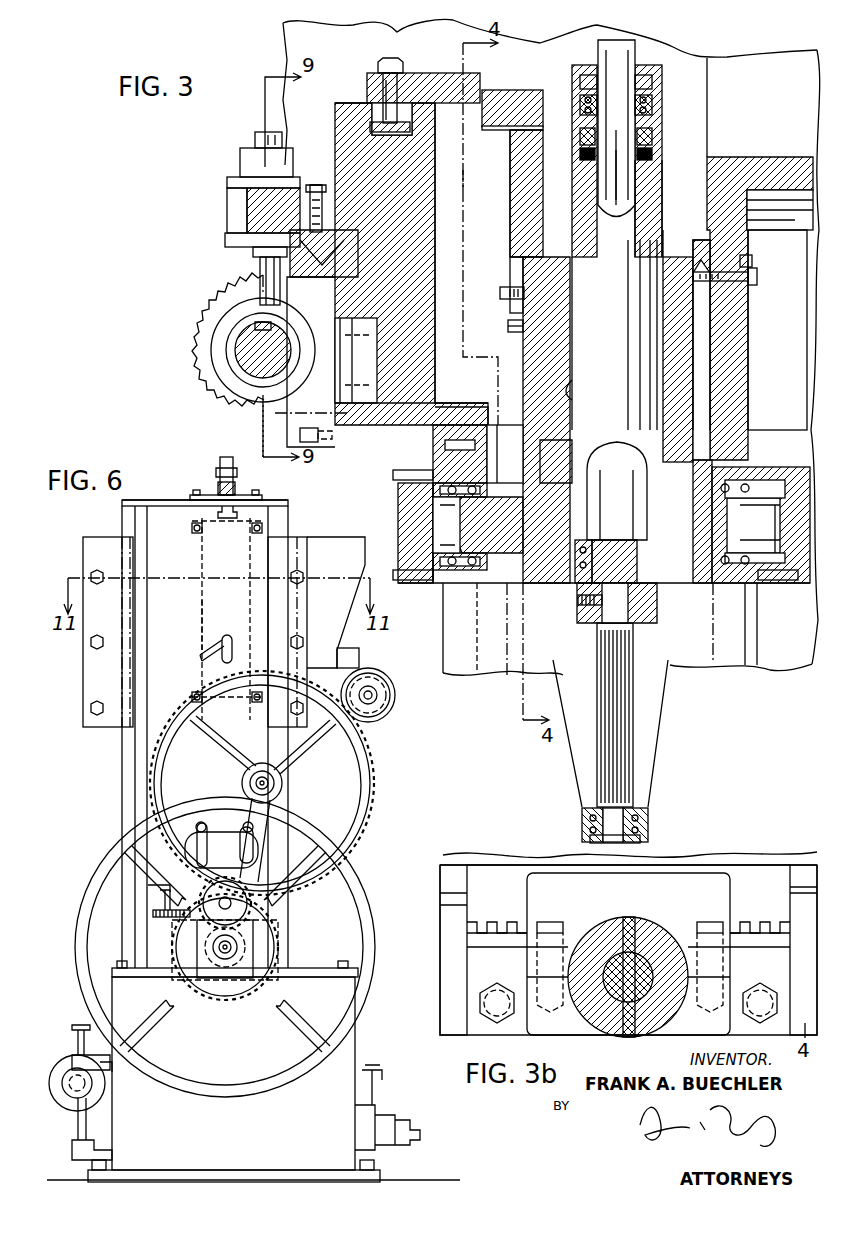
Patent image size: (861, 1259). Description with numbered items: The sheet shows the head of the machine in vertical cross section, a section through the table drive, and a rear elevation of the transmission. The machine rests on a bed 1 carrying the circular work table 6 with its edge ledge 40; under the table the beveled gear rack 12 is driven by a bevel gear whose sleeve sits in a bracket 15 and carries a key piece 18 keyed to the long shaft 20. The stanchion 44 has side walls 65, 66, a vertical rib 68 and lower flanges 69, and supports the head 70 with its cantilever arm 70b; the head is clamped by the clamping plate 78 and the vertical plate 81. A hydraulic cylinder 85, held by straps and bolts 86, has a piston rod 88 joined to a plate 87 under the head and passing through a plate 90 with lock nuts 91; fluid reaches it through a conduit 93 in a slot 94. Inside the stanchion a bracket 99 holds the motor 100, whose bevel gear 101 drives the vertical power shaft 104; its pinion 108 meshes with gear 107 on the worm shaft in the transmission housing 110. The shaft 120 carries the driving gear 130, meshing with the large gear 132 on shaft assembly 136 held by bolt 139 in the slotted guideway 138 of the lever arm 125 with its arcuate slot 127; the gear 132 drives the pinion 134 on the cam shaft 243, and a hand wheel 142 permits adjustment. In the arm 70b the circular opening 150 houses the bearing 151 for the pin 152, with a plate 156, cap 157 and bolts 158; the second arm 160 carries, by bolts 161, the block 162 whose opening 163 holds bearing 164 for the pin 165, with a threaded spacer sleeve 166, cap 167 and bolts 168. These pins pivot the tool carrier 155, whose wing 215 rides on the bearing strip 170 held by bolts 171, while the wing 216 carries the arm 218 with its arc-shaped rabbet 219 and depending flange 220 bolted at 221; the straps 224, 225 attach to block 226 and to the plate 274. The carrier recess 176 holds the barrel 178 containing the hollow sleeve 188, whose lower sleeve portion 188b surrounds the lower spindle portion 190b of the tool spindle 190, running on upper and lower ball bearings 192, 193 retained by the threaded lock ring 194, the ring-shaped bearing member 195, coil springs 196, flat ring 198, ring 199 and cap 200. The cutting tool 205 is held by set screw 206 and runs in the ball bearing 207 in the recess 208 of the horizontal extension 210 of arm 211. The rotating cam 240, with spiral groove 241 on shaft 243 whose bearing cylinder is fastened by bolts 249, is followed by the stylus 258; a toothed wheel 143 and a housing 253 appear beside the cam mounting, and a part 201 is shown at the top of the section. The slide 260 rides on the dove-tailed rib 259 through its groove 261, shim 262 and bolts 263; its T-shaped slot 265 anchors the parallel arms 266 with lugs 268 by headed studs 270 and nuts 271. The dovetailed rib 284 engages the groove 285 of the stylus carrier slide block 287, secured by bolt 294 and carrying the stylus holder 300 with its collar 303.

In FIG. 6, the bed 1 is at (345, 1052).
In FIG. 3B, the work table 6 is at (445, 875).
In FIG. 3B, the circular beveled gear rack 12 is at (795, 865).
In FIG. 3B, the bracket 15 is at (720, 880).
In FIG. 3B, the key piece 18 is at (635, 935).
In FIG. 3B, the long shaft 20 is at (610, 990).
In FIG. 3B, the ledge 40 is at (482, 863).
In FIG. 6, the stanchion 44 is at (278, 925).
In FIG. 6, the side wall 65 is at (278, 777).
In FIG. 6, the side wall 66 is at (122, 796).
In FIG. 6, the vertical rib 68 is at (127, 505).
In FIG. 6, the lower flanges 69 is at (120, 960).
In FIG. 6, the head 70 is at (322, 548).
In FIG. 3, the cantilever arm 70b is at (752, 262).
In FIG. 6, the clamping plate 78 is at (105, 545).
In FIG. 6, the vertical plate 81 is at (285, 548).
In FIG. 6, the hydraulic cylinder 85 is at (200, 605).
In FIG. 6, the straps and bolts 86 is at (305, 655).
In FIG. 6, the plate 87 is at (205, 770).
In FIG. 3, the piston rod 88 is at (257, 447).
In FIG. 6, the plate 90 is at (240, 495).
In FIG. 6, the lock nuts 91 is at (238, 462).
In FIG. 6, the conduit 93 is at (218, 640).
In FIG. 6, the slot 94 is at (228, 636).
In FIG. 6, the bracket 99 is at (199, 830).
In FIG. 6, the motor 100 is at (262, 840).
In FIG. 6, the bevel gear 101 is at (128, 844).
In FIG. 6, the vertical power shaft 104 is at (160, 896).
In FIG. 6, the gear 107 is at (177, 903).
In FIG. 6, the pinion 108 is at (151, 1012).
In FIG. 6, the transmission housing 110 is at (278, 944).
In FIG. 6, the shaft 120 is at (223, 960).
In FIG. 6, the lever arm 125 is at (292, 874).
In FIG. 6, the arcuate slot 127 is at (250, 903).
In FIG. 6, the driving gear 130 is at (264, 1010).
In FIG. 6, the large gear 132 is at (372, 790).
In FIG. 6, the pinion 134 is at (383, 705).
In FIG. 6, the shaft assembly 136 is at (290, 786).
In FIG. 6, the slotted guideway 138 is at (258, 852).
In FIG. 6, the bolt 139 is at (250, 775).
In FIG. 6, the hand wheel 142 is at (360, 890).
In FIG. 3, the gear 143 is at (192, 318).
In FIG. 3, the circular opening 150 is at (713, 663).
In FIG. 3, the bearing 151 is at (757, 590).
In FIG. 3, the pin 152 is at (700, 568).
In FIG. 3, the tool carrier 155 is at (697, 393).
In FIG. 3, the plate 156 is at (757, 432).
In FIG. 3, the cap 157 is at (762, 597).
In FIG. 3, the bolts 158 is at (800, 465).
In FIG. 3, the second arm 160 is at (428, 418).
In FIG. 3, the bolts 161 is at (398, 467).
In FIG. 3, the block 162 is at (435, 449).
In FIG. 3, the opening 163 is at (455, 585).
In FIG. 3, the bearing 164 is at (443, 600).
In FIG. 3, the pin 165 is at (560, 440).
In FIG. 3, the threaded spacer sleeve 166 is at (488, 483).
In FIG. 3, the cap 167 is at (399, 565).
In FIG. 3, the bolts 168 is at (395, 508).
In FIG. 3, the bearing strip 170 is at (712, 244).
In FIG. 3, the bolts 171 is at (756, 278).
In FIG. 3, the cylindrical recess 176 is at (565, 388).
In FIG. 3, the barrel 178 is at (653, 207).
In FIG. 3, the hollow sleeve 188 is at (640, 192).
In FIG. 3, the housing lower portion 188b is at (607, 445).
In FIG. 3, the tool spindle 190 is at (620, 153).
In FIG. 3, the spindle lower portion 190b is at (614, 505).
In FIG. 3, the upper ball bearings 192 is at (655, 83).
In FIG. 3, the lower ball bearings 193 is at (575, 587).
In FIG. 3, the threaded lock ring 194 is at (584, 612).
In FIG. 3, the ring-shaped bearing member 195 is at (655, 122).
In FIG. 3, the coil springs 196 is at (654, 145).
In FIG. 3, the flat ring 198 is at (654, 158).
In FIG. 3, the ring 199 is at (647, 73).
In FIG. 3, the cap 200 is at (590, 57).
In FIG. 3, the head 201 is at (318, 185).
In FIG. 3, the cutting tool 205 is at (617, 767).
In FIG. 3, the set screw 206 is at (658, 613).
In FIG. 3, the ball bearing 207 is at (634, 845).
In FIG. 3, the recess 208 is at (649, 828).
In FIG. 3, the horizontal extension 210 is at (583, 837).
In FIG. 3, the arm 211 is at (585, 767).
In FIG. 3, the wing 215 is at (672, 257).
In FIG. 3, the wing 216 is at (561, 326).
In FIG. 3, the arm 218 is at (520, 208).
In FIG. 3, the arc-shaped rabbet 219 is at (522, 253).
In FIG. 3, the depending flange 220 is at (519, 320).
In FIG. 3, the bolt 221 is at (505, 287).
In FIG. 3, the flexible steel strap 224 is at (500, 128).
In FIG. 3, the flexible steel strap 225 is at (616, 128).
In FIG. 3, the block 226 is at (463, 198).
In FIG. 3, the rotating cam 240 is at (232, 352).
In FIG. 3, the spiral groove 241 is at (238, 378).
In FIG. 3, the shaft 243 is at (236, 343).
In FIG. 6, the bolts 249 is at (370, 668).
In FIG. 3, the housing 253 is at (287, 422).
In FIG. 3, the stylus 258 is at (260, 280).
In FIG. 3, the dove-tailed rib 259 is at (420, 228).
In FIG. 3, the slide 260 is at (353, 113).
In FIG. 3, the dove-tailed groove 261 is at (348, 145).
In FIG. 3, the shim 262 is at (367, 360).
In FIG. 3, the bolts 263 is at (362, 360).
In FIG. 3, the T-shaped slot 265 is at (405, 118).
In FIG. 3, the parallel arms 266 is at (450, 75).
In FIG. 3, the lugs 268 is at (388, 71).
In FIG. 3, the headed stud 270 is at (386, 90).
In FIG. 3, the nut 271 is at (378, 70).
In FIG. 3, the plate 274 is at (495, 124).
In FIG. 3, the dovetailed rib 284 is at (300, 242).
In FIG. 3, the dove-tailed groove 285 is at (280, 230).
In FIG. 3, the stylus carrier slide block 287 is at (237, 196).
In FIG. 3, the bolt 294 is at (313, 184).
In FIG. 3, the stylus holder 300 is at (250, 156).
In FIG. 3, the collar 303 is at (253, 250).